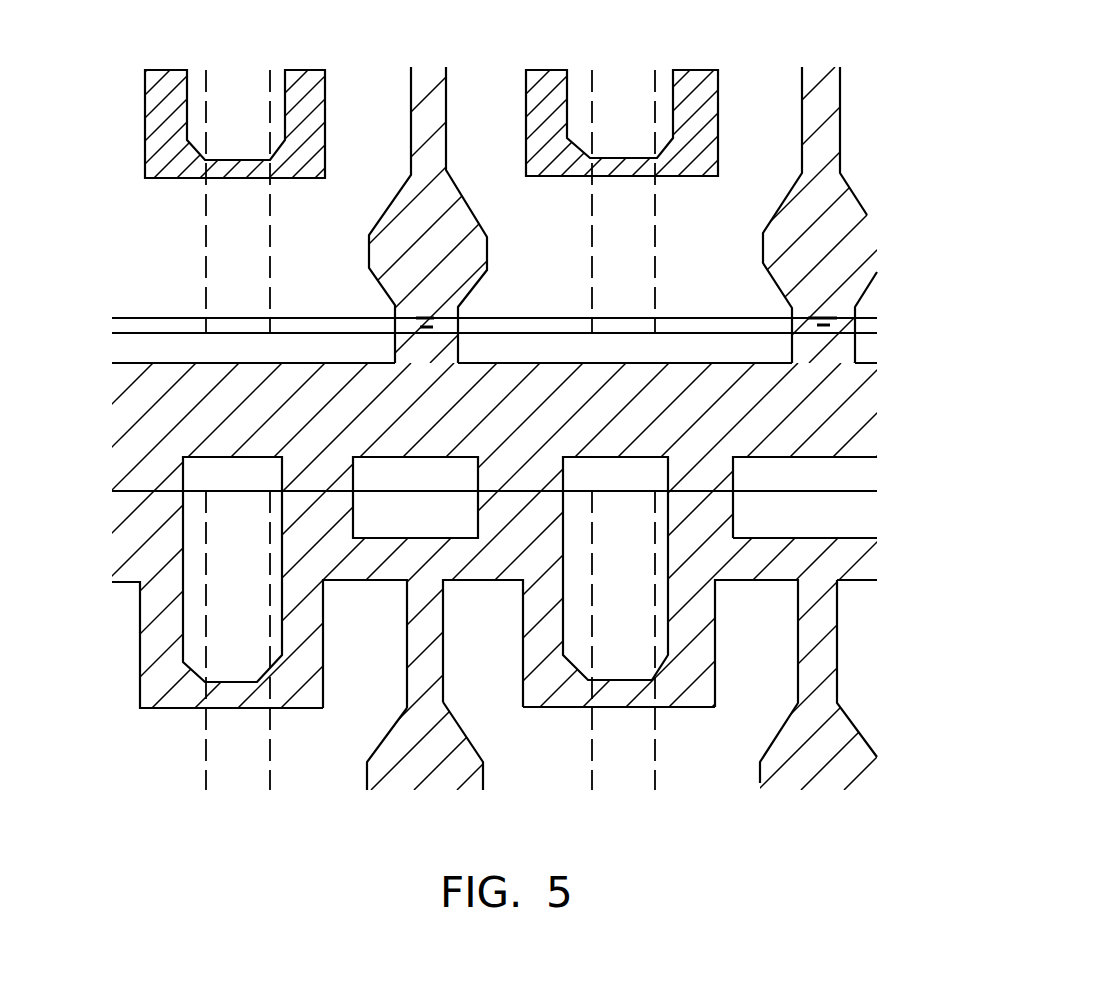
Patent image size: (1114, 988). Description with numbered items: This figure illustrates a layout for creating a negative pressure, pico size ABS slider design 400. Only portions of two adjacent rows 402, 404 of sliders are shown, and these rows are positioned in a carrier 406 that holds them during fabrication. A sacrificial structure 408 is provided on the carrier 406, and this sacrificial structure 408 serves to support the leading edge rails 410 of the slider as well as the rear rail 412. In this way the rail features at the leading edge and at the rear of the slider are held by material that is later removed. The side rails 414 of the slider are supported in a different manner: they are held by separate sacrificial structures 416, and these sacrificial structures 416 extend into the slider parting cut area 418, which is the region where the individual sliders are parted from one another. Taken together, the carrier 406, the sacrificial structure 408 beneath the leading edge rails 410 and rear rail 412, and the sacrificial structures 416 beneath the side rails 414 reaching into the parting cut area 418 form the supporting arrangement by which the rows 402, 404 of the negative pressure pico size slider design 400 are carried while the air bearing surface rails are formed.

The negative pressure, pico size ABS slider design 400 is at (557, 428).
The row 402 is at (883, 152).
The row 404 is at (865, 657).
The carrier 406 is at (115, 347).
The sacrificial structure 408 is at (865, 403).
The leading edge rails 410 is at (477, 518).
The rear rail 412 is at (463, 347).
The side rails 414 is at (522, 657).
The sacrificial structures 416 is at (620, 707).
The slider parting cut area 418 is at (633, 95).